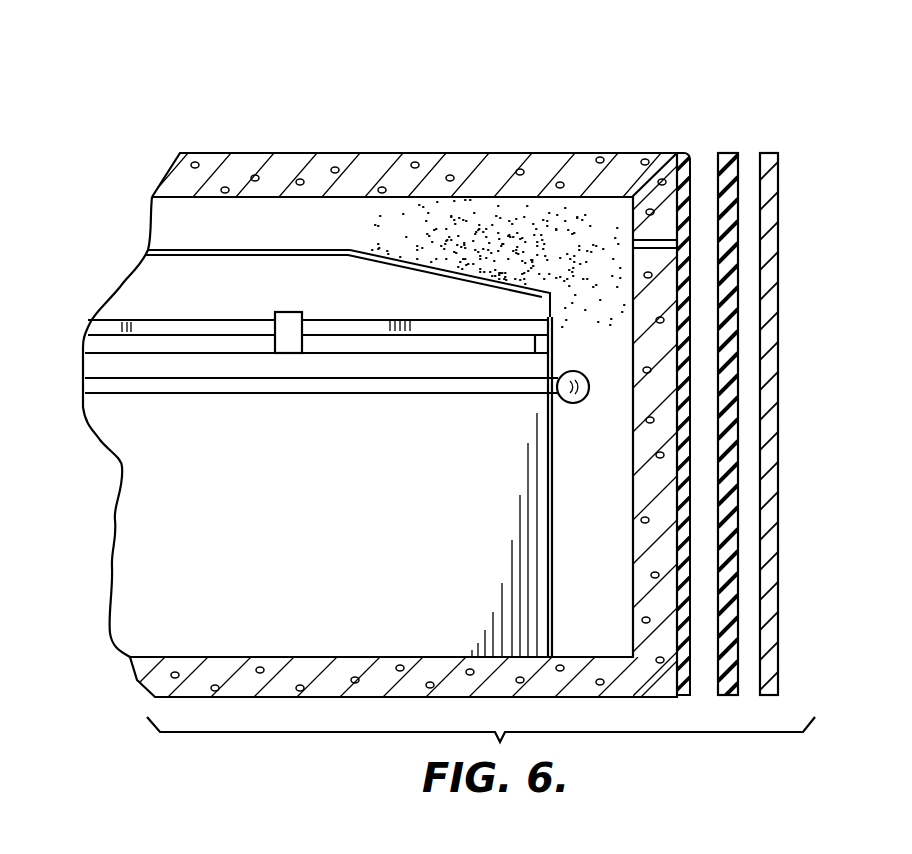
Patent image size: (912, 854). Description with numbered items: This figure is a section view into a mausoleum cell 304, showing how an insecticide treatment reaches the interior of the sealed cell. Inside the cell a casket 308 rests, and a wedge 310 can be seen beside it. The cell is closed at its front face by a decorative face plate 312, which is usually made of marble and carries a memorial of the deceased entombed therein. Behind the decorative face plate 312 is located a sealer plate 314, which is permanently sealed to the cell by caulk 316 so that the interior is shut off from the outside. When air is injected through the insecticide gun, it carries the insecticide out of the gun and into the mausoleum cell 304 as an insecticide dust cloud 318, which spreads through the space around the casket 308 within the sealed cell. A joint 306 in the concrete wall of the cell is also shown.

The mausoleum cell 304 is at (447, 153).
The joint in concrete wall 306 is at (630, 245).
The casket 308 is at (258, 250).
The wedge 310 is at (275, 313).
The decorative face plate 312 is at (778, 272).
The sealer plate 314 is at (736, 200).
The caulk 316 is at (680, 158).
The insecticide dust cloud 318 is at (597, 312).